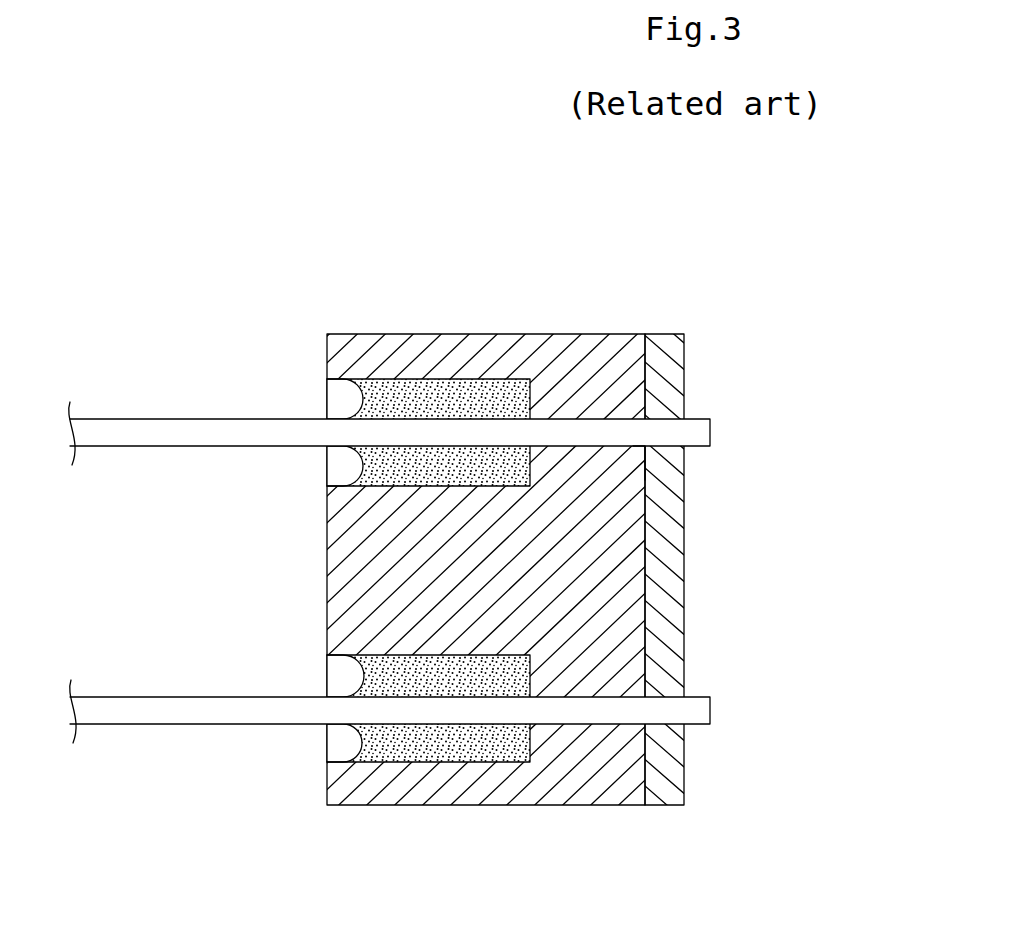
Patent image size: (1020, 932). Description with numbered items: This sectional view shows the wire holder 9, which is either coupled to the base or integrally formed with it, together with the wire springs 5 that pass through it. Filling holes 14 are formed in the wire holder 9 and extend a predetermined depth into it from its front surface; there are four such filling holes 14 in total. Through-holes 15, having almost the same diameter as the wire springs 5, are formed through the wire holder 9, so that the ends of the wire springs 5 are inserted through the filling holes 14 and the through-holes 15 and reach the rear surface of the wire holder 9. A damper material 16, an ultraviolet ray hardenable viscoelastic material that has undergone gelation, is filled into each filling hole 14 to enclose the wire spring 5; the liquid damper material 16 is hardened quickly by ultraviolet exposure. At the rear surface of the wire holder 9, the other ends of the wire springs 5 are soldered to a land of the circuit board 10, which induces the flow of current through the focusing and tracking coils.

The wire spring 5 is at (207, 427).
The wire holder 9 is at (592, 334).
The circuit board 10 is at (665, 360).
The filling hole 14 is at (327, 398).
The through-hole 15 is at (630, 446).
The damper material 16 is at (375, 660).